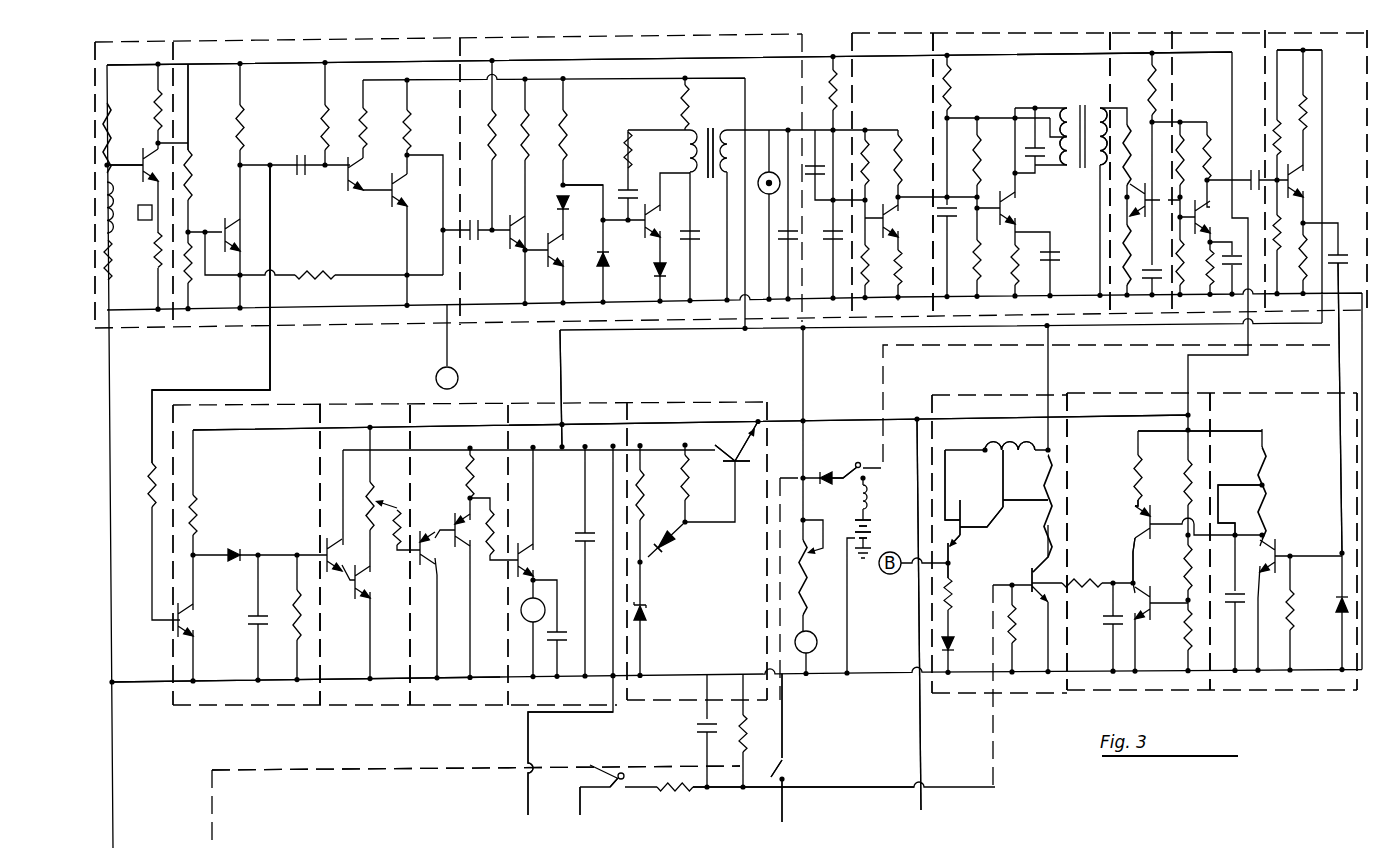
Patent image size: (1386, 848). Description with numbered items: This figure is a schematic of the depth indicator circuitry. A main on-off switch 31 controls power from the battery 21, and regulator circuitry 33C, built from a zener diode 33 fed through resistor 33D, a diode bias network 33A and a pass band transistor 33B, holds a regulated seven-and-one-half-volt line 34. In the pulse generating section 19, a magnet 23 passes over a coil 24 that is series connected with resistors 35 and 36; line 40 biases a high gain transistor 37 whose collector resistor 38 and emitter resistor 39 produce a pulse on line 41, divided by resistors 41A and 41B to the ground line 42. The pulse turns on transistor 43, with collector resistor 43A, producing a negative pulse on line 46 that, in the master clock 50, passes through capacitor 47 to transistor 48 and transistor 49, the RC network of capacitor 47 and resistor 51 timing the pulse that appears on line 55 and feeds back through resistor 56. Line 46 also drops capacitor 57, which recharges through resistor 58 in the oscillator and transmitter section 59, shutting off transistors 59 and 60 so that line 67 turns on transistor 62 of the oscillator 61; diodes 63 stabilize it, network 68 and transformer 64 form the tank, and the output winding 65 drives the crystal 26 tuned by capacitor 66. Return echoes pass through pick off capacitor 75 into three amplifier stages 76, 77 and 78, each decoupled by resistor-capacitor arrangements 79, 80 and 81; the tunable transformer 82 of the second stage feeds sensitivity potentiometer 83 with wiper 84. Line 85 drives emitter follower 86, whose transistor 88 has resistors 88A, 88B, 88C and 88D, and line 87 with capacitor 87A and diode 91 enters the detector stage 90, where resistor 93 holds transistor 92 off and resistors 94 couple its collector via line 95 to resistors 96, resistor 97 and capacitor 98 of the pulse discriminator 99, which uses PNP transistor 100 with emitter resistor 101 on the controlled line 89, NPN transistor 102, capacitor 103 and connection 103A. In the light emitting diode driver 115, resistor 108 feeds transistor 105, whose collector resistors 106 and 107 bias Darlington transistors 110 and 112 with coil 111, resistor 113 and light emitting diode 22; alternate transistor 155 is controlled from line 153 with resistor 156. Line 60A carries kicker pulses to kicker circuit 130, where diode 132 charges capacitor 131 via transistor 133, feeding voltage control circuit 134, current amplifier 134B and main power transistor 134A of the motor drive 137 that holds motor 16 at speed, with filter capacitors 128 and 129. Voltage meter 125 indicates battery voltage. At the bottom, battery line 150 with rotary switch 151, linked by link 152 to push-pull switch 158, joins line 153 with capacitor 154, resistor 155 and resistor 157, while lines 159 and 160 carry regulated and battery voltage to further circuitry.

The pulse generating section 19 is at (131, 344).
The master clock section 50 is at (341, 328).
The oscillator drive and crystal transmitter section 59 is at (540, 328).
The controlled voltage line 34 is at (283, 64).
The resistor 35 is at (108, 125).
The resistor 38 is at (158, 104).
The line 40 is at (118, 165).
The high gain transistor 37 is at (150, 166).
The line 41 is at (187, 143).
The resistor 41A is at (191, 196).
The resistor 41B is at (191, 278).
The coil 24 is at (116, 204).
The magnet 23 is at (142, 221).
The resistor 39 is at (158, 246).
The resistor 36 is at (112, 292).
The transistor 43 is at (229, 232).
The resistor 43A is at (243, 110).
The resistor 51 is at (325, 116).
The line 46 is at (300, 155).
The capacitor 47 is at (306, 175).
The transistor 48 is at (358, 162).
The transistor 49 is at (398, 194).
The resistor 56 is at (320, 270).
The ground line 42 is at (207, 326).
The line 60A is at (208, 390).
The line 55 is at (446, 352).
The resistor 58 is at (492, 136).
The capacitor 57 is at (478, 240).
The transistor 60 is at (560, 262).
The diodes 63 is at (600, 255).
The oscillator circuit 61 is at (625, 152).
The line 67 is at (570, 185).
The capacitor-resistor network 68 is at (630, 162).
The transformer 64 is at (690, 110).
The output winding 65 is at (712, 130).
The transistor 62 is at (652, 222).
The crystal 26 is at (758, 138).
The resistor-capacitor series connection 79 is at (832, 108).
The AC pick off capacitor 75 is at (814, 188).
The capacitor 66 is at (796, 245).
The first stage amplifier 76 is at (902, 30).
The second stage amplifier 77 is at (1018, 30).
The third stage amplifier 78 is at (1190, 28).
The emitter follower transistor circuit 86 is at (1328, 25).
The line 80 is at (950, 115).
The transformer 82 is at (1080, 100).
The line 81 is at (1156, 68).
The potentiometer 83 is at (1140, 186).
The wiper 84 is at (1146, 208).
The line 85 is at (1254, 168).
The resistor 88C is at (1282, 128).
The resistor 88A is at (1310, 125).
The transistor 88 is at (1302, 180).
The capacitor 87A is at (1345, 254).
The resistor 88D is at (1280, 240).
The resistor 88B is at (1305, 265).
The line 87 is at (1340, 368).
The signal detector stage 90 is at (1282, 392).
The pulse discriminator circuit 99 is at (1115, 392).
The light emitting diode power driven circuit 115 is at (978, 393).
The kicker circuit 130 is at (244, 706).
The voltage control circuit 134 is at (374, 706).
The current amplifier 134B is at (460, 706).
The motor drive circuit 137 is at (584, 402).
The voltage regulator circuitry 33C is at (690, 402).
The diode 132 is at (232, 548).
The capacitor 131 is at (257, 614).
The control transistor 133 is at (195, 633).
The filter capacitor 128 is at (585, 526).
The main power transistor 134A is at (526, 560).
The filter capacitor 129 is at (560, 628).
The motor 16 is at (521, 612).
The resistor 33D is at (647, 500).
The pass band transistor 33B is at (746, 450).
The diode bias network 33A is at (670, 544).
The zener diode 33 is at (645, 604).
The main on-off switch 31 is at (852, 466).
The battery 21 is at (900, 516).
The voltage meter 125 is at (810, 606).
The battery line 150 is at (783, 718).
The rotary on-off switch 151 is at (783, 765).
The line 153 is at (832, 787).
The capacitor 154 is at (697, 728).
The alternate transistor 155 is at (744, 734).
The resistor 157 is at (676, 790).
The switch 158 is at (616, 785).
The link 152 is at (400, 772).
The battery line 160 is at (527, 805).
The controlled voltage line 159 is at (923, 805).
The PNP transistor 110 is at (1001, 491).
The induction coil 111 is at (1026, 459).
The resistor 107 is at (1025, 494).
The NPN transistor 112 is at (946, 518).
The resistor 106 is at (1045, 532).
The transistor 105 is at (1040, 564).
The resistor 113 is at (952, 565).
The resistor 156 is at (1009, 622).
The light emitting diode 22 is at (953, 644).
The resistor 101 is at (1130, 465).
The PNP transistor 100 is at (1145, 510).
The lead 103A is at (1148, 545).
The resistor 108 is at (1122, 582).
The resistors 96 is at (1166, 516).
The NPN transistor 102 is at (1110, 586).
The capacitor 103 is at (1112, 623).
The resistor 97 is at (1185, 645).
The controlled voltage line 89 is at (1226, 430).
The resistors 94 is at (1268, 480).
The line 95 is at (1245, 530).
The transistor 92 is at (1274, 566).
The capacitor 98 is at (1234, 597).
The diode 91 is at (1338, 606).
The resistor 93 is at (1294, 618).